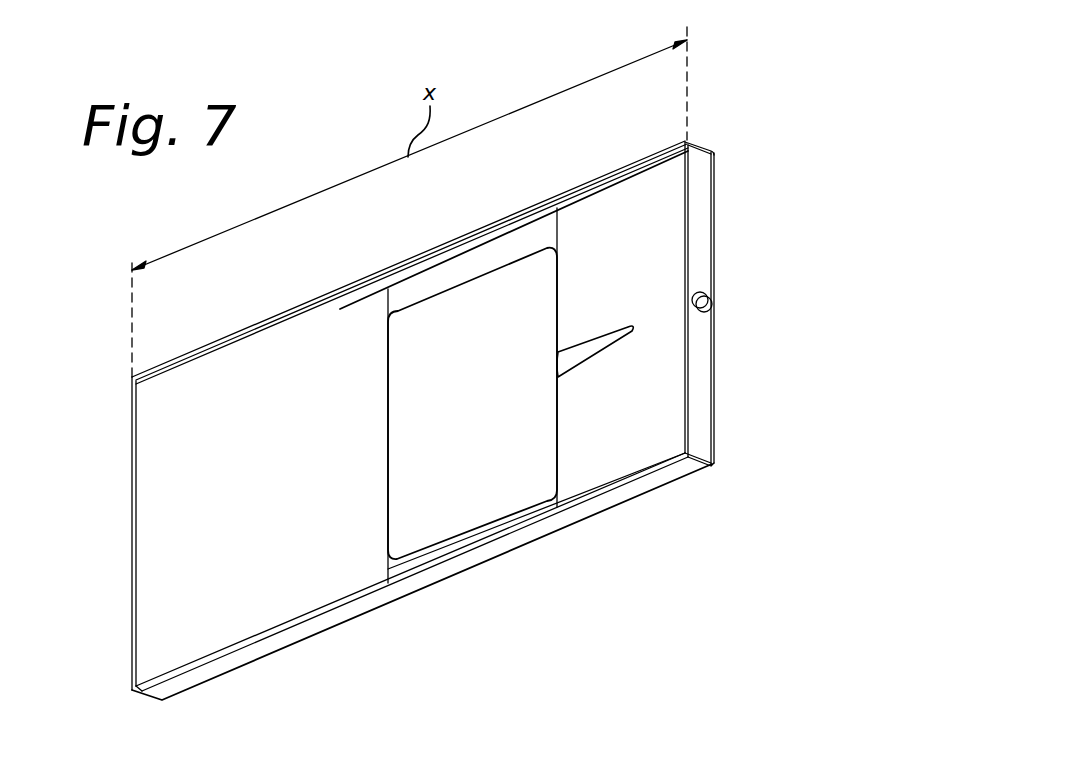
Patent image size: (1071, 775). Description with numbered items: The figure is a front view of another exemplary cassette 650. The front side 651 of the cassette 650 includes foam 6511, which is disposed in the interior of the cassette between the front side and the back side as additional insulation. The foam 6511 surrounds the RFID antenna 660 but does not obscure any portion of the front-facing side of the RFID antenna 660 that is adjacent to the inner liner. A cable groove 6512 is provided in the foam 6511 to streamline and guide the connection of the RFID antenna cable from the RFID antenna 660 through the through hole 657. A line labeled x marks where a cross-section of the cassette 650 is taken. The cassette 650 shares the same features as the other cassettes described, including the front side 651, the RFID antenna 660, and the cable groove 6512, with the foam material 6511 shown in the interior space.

The cassette 650 is at (737, 82).
The front side 651 is at (185, 531).
The foam 6511 is at (580, 235).
The cable groove 6512 is at (602, 345).
The through hole 657 is at (708, 297).
The RFID antenna 660 is at (460, 492).